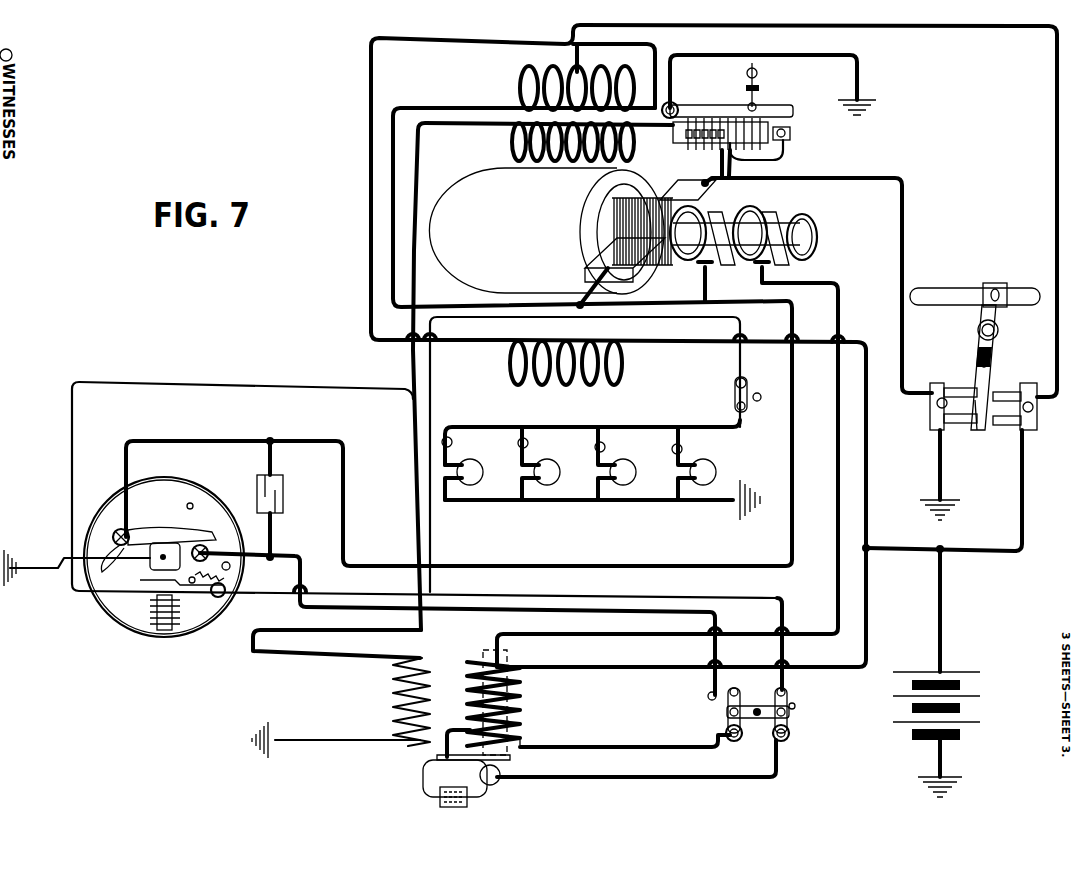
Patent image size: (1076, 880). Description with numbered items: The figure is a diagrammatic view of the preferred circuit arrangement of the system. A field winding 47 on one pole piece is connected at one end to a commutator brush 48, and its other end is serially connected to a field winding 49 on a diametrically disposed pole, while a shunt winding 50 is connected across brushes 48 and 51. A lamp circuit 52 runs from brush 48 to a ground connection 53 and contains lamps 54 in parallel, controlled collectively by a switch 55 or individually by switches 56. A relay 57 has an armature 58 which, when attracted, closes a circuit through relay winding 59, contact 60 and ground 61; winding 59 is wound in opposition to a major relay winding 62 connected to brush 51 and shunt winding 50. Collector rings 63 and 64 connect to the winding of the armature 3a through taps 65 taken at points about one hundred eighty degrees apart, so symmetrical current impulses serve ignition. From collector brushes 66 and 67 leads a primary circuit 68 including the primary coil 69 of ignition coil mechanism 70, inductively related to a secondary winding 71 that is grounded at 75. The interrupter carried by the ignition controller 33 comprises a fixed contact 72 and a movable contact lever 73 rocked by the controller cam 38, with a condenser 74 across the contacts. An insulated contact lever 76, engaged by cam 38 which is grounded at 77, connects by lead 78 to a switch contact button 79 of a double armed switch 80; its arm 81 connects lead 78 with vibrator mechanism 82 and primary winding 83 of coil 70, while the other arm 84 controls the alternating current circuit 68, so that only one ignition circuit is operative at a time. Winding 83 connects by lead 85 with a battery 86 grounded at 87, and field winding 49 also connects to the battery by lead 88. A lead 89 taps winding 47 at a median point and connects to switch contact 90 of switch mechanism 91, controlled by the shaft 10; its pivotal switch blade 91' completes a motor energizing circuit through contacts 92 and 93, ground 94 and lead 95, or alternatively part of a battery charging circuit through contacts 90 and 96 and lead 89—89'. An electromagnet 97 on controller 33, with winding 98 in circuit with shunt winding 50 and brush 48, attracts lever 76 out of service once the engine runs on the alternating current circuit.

The armature 3a is at (614, 231).
The shaft 10 is at (962, 290).
The ignition controller 33 is at (212, 475).
The controller cam 38 is at (158, 560).
The field winding 47 is at (516, 94).
The commutator brush 48 is at (585, 265).
The field winding 49 is at (618, 440).
The shunt winding 50 is at (508, 140).
The brush 51 is at (712, 190).
The lamp circuit 52 is at (636, 418).
The ground connection 53 is at (745, 500).
The lamps 54 is at (628, 462).
The switch 55 is at (733, 391).
The switches 56 is at (454, 442).
The relay 57 is at (703, 112).
The armature 58 is at (770, 108).
The relay winding 59 is at (775, 160).
The contact 60 is at (792, 134).
The ground 61 is at (872, 100).
The major relay winding 62 is at (695, 140).
The collector ring 63 is at (770, 213).
The collector ring 64 is at (815, 228).
The taps 65 is at (695, 255).
The collector brush 66 is at (700, 280).
The collector brush 67 is at (786, 262).
The primary circuit 68 is at (795, 552).
The primary coil 69 is at (525, 725).
The ignition coil mechanism 70 is at (525, 690).
The secondary winding 71 is at (385, 698).
The fixed contact 72 is at (208, 553).
The movable contact lever 73 is at (148, 530).
The condenser 74 is at (285, 497).
The ground 75 is at (262, 740).
The insulated contact lever 76 is at (212, 590).
The ground 77 is at (12, 566).
The lead 78 is at (550, 606).
The switch contact button 79 is at (790, 690).
The double armed switch 80 is at (790, 714).
The arm 81 is at (790, 734).
The vibrator mechanism 82 is at (423, 772).
The primary winding 83 is at (507, 668).
The arm 84 is at (722, 730).
The lead 85 is at (867, 625).
The battery 86 is at (946, 670).
The ground 87 is at (941, 777).
The lead 88 is at (867, 459).
The lead 89 is at (714, 211).
The lead 89' is at (1039, 524).
The switch contact 90 is at (1010, 392).
The switch mechanism 91 is at (1000, 367).
The pivotal switch blade 91' is at (972, 427).
The contact 92 is at (957, 440).
The contact 93 is at (943, 390).
The ground 94 is at (942, 503).
The lead 95 is at (902, 328).
The contact 96 is at (1010, 440).
The electromagnet 97 is at (163, 628).
The winding 98 is at (152, 615).